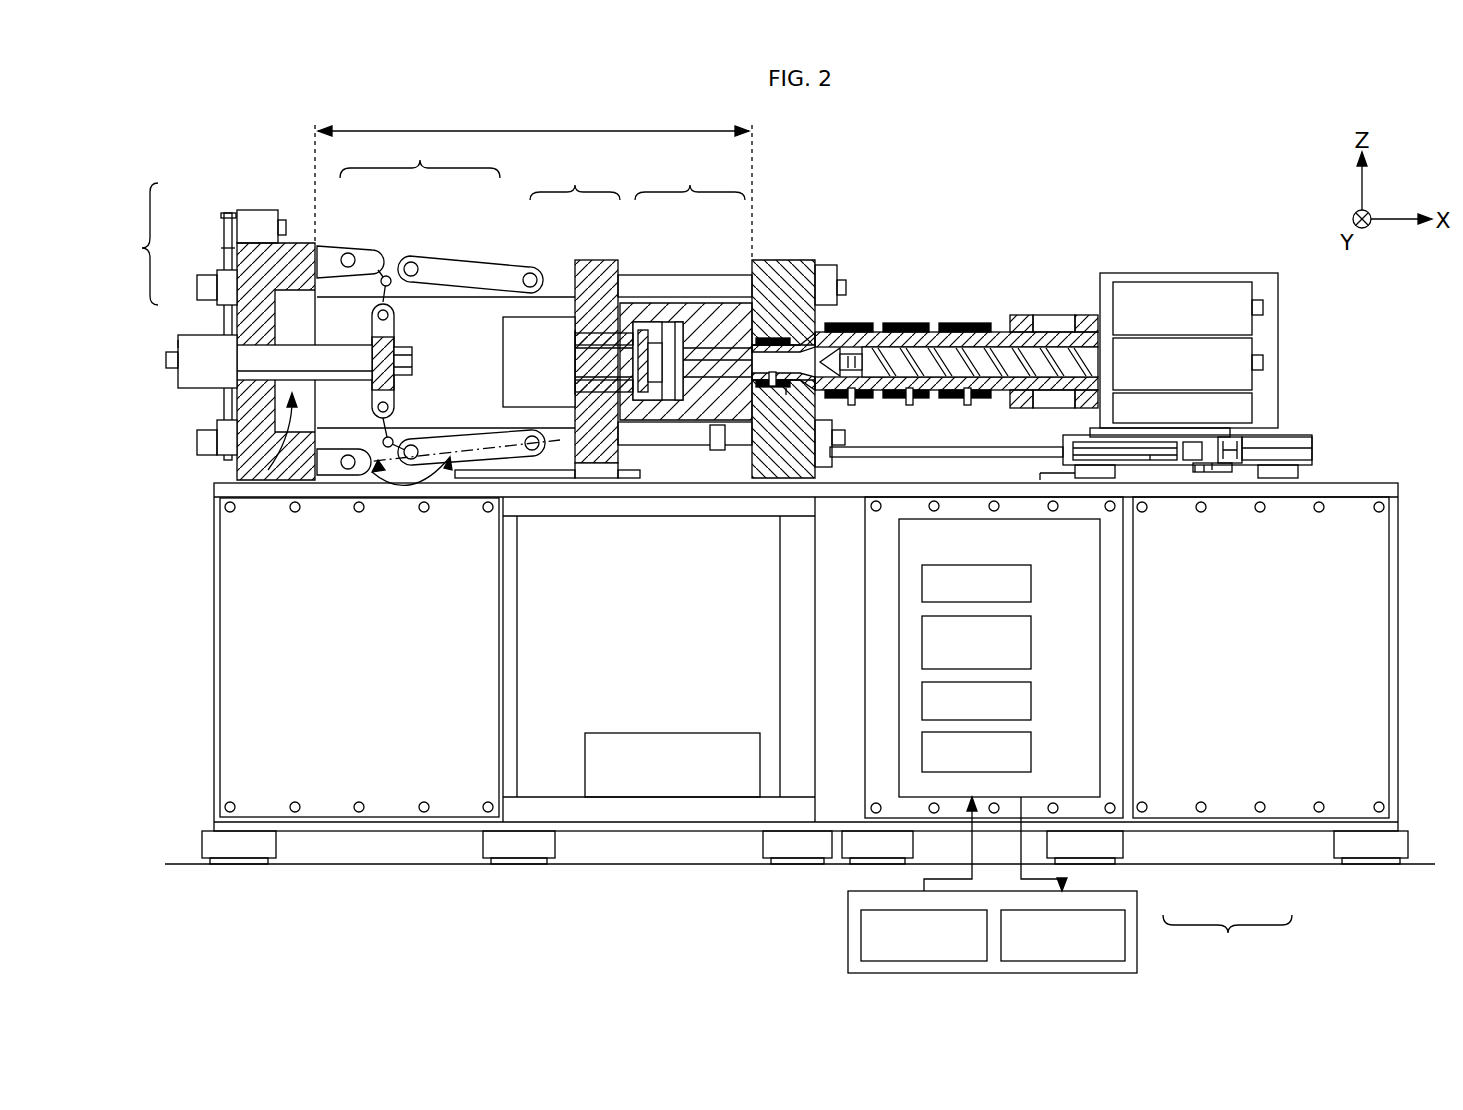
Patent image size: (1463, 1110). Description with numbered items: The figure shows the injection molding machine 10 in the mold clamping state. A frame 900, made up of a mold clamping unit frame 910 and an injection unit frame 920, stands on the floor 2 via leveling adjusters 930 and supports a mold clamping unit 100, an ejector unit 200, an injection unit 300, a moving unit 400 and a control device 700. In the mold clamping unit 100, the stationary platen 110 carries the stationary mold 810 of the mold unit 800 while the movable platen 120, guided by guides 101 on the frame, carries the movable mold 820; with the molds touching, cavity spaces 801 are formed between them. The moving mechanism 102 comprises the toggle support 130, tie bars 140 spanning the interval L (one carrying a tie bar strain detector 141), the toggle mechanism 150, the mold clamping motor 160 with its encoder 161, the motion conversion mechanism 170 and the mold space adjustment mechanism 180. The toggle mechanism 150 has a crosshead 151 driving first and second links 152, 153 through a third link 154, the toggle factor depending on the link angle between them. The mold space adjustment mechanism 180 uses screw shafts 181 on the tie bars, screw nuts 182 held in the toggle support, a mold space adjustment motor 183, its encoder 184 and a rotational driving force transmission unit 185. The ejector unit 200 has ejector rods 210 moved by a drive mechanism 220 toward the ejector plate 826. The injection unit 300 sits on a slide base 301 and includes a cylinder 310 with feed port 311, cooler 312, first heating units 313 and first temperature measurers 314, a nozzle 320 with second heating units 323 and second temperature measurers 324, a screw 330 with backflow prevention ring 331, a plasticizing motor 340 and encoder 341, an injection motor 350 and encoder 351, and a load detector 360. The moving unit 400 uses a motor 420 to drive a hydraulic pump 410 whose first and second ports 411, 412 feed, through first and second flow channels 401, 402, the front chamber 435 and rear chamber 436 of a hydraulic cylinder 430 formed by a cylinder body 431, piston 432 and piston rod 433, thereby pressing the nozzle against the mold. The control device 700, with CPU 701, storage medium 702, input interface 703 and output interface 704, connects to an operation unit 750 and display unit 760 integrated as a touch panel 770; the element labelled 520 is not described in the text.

The injection molding machine 10 is at (144, 148).
The mold clamping unit 100 is at (838, 233).
The guides 101 is at (642, 472).
The moving mechanism 102 is at (167, 336).
The stationary platen 110 is at (780, 280).
The movable platen 120 is at (607, 262).
The toggle support 130 is at (238, 413).
The tie bars 140 is at (700, 428).
The tie bar strain detector 141 is at (718, 412).
The toggle mechanism 150 is at (402, 163).
The crosshead 151 is at (365, 300).
The first link 152 is at (462, 272).
The second link 153 is at (470, 440).
The third link 154 is at (386, 300).
The mold clamping motor 160 is at (178, 380).
The mold clamping motor encoder 161 is at (166, 360).
The motion conversion mechanism 170 is at (290, 340).
The mold space adjustment mechanism 180 is at (98, 263).
The screw shafts 181 is at (200, 288).
The screw nuts 182 is at (218, 285).
The mold space adjustment motor 183 is at (229, 212).
The mold space adjustment motor encoder 184 is at (280, 215).
The rotational driving force transmission unit 185 is at (217, 240).
The ejector unit 200 is at (560, 191).
The ejector rods 210 is at (592, 333).
The drive mechanism 220 is at (541, 347).
The injection unit 300 is at (1266, 245).
The slide base 301 is at (1232, 434).
The cylinder 310 is at (878, 337).
The feed port 311 is at (1047, 340).
The cooler 312 is at (1017, 320).
The first heating units 313 is at (968, 325).
The first temperature measurers 314 is at (970, 403).
The nozzle 320 is at (840, 273).
The second heating units 323 is at (772, 388).
The second temperature measurers 324 is at (790, 392).
The screw 330 is at (928, 360).
The backflow prevention ring 331 is at (862, 347).
The plasticizing motor 340 is at (1225, 282).
The plasticizing motor encoder 341 is at (1263, 305).
The injection motor 350 is at (1253, 345).
The injection motor encoder 351 is at (1264, 362).
The load detector 360 is at (1253, 410).
The moving unit 400 is at (895, 440).
The first flow channel 401 is at (1095, 437).
The second flow channel 402 is at (1205, 466).
The hydraulic pump 410 is at (1232, 462).
The first port 411 is at (1260, 448).
The second port 412 is at (1215, 465).
The motor 420 is at (1290, 466).
The hydraulic cylinder 430 is at (1208, 961).
The cylinder body 431 is at (1205, 460).
The piston 432 is at (1188, 460).
The piston rod 433 is at (1152, 460).
The front chamber 435 is at (1085, 466).
The rear chamber 436 is at (1195, 466).
The link 520 is at (330, 463).
The control device 700 is at (972, 519).
The central processing unit 701 is at (1034, 584).
The storage medium 702 is at (1034, 644).
The input interface 703 is at (1034, 701).
The output interface 704 is at (1034, 751).
The operation unit 750 is at (861, 935).
The display unit 760 is at (1126, 940).
The touch panel 770 is at (860, 893).
The mold unit 800 is at (672, 191).
The cavity spaces 801 is at (665, 335).
The stationary mold 810 is at (740, 327).
The movable mold 820 is at (679, 325).
The ejector plate 826 is at (638, 328).
The frame 900 is at (205, 500).
The mold clamping unit frame 910 is at (205, 656).
The injection unit frame 920 is at (1410, 736).
The leveling adjusters 930 is at (1366, 855).
The floor 2 is at (1420, 862).